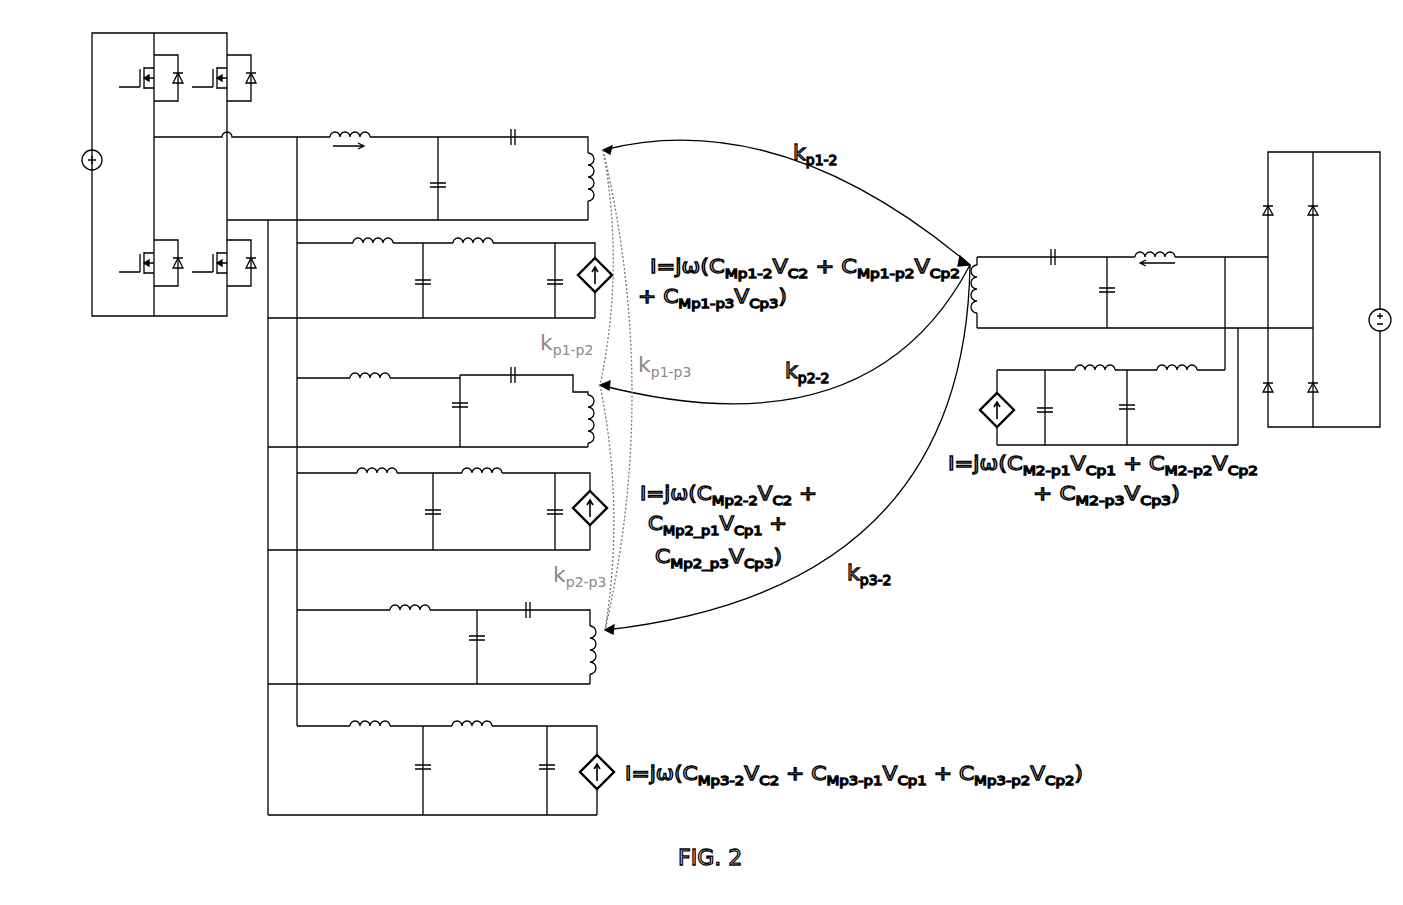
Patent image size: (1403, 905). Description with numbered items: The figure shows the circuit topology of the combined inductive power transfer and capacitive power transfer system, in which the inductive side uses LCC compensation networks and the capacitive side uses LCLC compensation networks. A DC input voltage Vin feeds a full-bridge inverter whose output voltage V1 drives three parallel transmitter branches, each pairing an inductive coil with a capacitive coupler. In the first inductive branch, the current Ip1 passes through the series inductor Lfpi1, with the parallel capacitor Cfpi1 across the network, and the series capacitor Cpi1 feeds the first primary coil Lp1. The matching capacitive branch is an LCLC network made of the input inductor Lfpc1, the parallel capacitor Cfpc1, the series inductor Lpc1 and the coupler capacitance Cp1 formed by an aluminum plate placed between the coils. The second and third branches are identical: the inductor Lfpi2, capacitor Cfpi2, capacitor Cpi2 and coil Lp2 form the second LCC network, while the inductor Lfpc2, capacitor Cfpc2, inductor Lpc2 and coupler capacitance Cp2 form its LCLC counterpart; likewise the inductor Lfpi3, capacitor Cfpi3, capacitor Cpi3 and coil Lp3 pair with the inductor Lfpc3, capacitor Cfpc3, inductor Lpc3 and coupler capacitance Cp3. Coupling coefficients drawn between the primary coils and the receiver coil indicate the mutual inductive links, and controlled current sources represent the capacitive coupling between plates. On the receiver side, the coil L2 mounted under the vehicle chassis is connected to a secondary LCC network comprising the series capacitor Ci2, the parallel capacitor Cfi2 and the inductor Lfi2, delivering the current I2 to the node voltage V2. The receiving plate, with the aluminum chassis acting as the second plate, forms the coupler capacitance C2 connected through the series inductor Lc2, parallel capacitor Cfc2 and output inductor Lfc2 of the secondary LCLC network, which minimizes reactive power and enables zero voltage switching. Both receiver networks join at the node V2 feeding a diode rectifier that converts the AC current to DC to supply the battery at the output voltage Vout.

The input voltage Vin is at (72, 164).
The inverter output voltage V1 is at (267, 476).
The first IPT compensation inductor Lfpi1 is at (344, 121).
The first primary IPT coil Lp1 is at (572, 177).
The first IPT series compensation capacitor Cpi1 is at (506, 124).
The first IPT parallel compensation capacitor Cfpi1 is at (416, 189).
The first primary current Ip1 is at (346, 164).
The first CPT input compensation inductor Lfpc1 is at (373, 254).
The first CPT series compensation inductor Lpc1 is at (474, 254).
The first CPT parallel compensation capacitor Cfpc1 is at (400, 287).
The first CPT coupler capacitor Cp1 is at (535, 287).
The second IPT compensation inductor Lfpi2 is at (365, 360).
The second primary IPT coil Lp2 is at (571, 419).
The second IPT series compensation capacitor Cpi2 is at (503, 359).
The second IPT parallel compensation capacitor Cfpi2 is at (435, 409).
The second CPT input compensation inductor Lfpc2 is at (371, 485).
The second CPT series compensation inductor Lpc2 is at (482, 488).
The second CPT parallel compensation capacitor Cfpc2 is at (406, 524).
The second CPT coupler capacitor Cp2 is at (540, 524).
The third IPT compensation inductor Lfpi3 is at (395, 594).
The third primary IPT coil Lp3 is at (567, 650).
The third IPT series compensation capacitor Cpi3 is at (513, 595).
The third IPT parallel compensation capacitor Cfpi3 is at (451, 650).
The third CPT input compensation inductor Lfpc3 is at (373, 741).
The third CPT series compensation inductor Lpc3 is at (472, 741).
The third CPT parallel compensation capacitor Cfpc3 is at (395, 777).
The third CPT coupler capacitor Cp3 is at (530, 776).
The receiver IPT coil L2 is at (986, 289).
The secondary IPT compensation inductor Lfi2 is at (1152, 238).
The secondary IPT series compensation capacitor Ci2 is at (1047, 242).
The secondary IPT parallel compensation capacitor Cfi2 is at (1088, 302).
The secondary current I2 is at (1159, 279).
The rectifier input voltage V2 is at (1238, 313).
The output voltage Vout is at (1356, 322).
The secondary CPT series compensation inductor Lc2 is at (1095, 381).
The secondary CPT output compensation inductor Lfc2 is at (1177, 381).
The secondary CPT coupler capacitor C2 is at (1034, 422).
The secondary CPT parallel compensation capacitor Cfc2 is at (1149, 420).